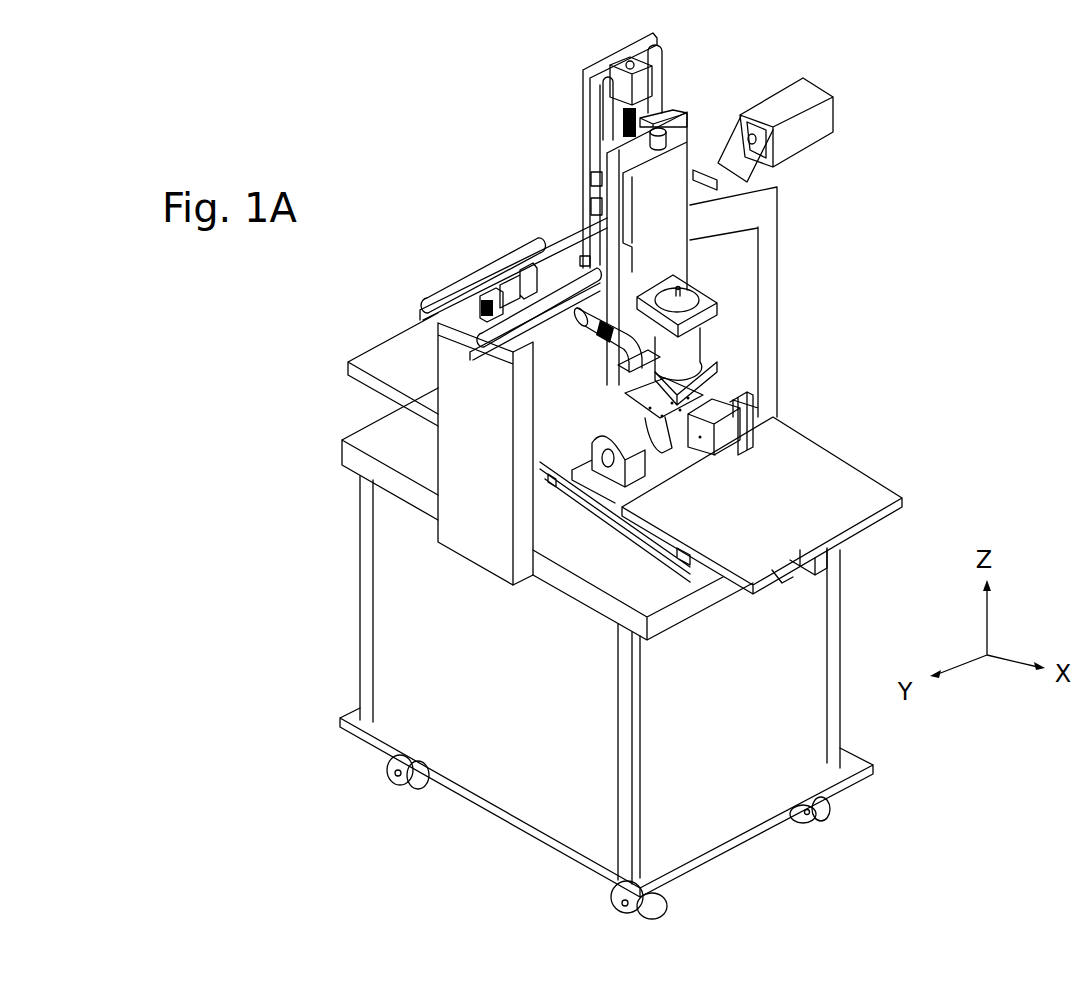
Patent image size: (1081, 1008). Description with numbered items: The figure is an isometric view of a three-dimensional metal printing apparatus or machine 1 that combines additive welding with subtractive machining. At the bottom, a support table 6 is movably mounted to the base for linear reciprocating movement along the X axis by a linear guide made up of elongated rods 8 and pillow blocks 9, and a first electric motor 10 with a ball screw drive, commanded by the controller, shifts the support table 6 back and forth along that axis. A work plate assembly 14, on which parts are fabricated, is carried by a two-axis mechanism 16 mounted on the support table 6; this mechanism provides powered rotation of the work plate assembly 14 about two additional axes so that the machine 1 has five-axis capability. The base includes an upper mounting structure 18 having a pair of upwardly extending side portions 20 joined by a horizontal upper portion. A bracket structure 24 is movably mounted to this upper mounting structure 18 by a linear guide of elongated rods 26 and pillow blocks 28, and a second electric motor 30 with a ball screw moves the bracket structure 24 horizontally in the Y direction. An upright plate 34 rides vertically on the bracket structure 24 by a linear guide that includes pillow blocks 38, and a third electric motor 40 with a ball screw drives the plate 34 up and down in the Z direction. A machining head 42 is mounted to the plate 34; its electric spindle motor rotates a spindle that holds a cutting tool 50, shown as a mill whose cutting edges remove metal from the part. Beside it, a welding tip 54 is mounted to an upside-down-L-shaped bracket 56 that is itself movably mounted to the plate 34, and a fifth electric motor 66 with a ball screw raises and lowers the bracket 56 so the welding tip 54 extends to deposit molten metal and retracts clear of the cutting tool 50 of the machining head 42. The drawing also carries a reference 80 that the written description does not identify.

The 3D metal printing apparatus 1 is at (877, 362).
The support table 6 is at (662, 460).
The elongated rods 8 is at (670, 547).
The pillow blocks 9 is at (552, 478).
The first electric motor 10 is at (800, 565).
The work plate assembly 14 is at (700, 403).
The two-axis mechanism 16 is at (764, 436).
The upper mounting structure 18 is at (498, 547).
The side portions 20 is at (493, 515).
The bracket structure 24 is at (563, 113).
The elongated rods 26 is at (488, 277).
The pillow blocks 28 is at (590, 262).
The second electric motor 30 is at (823, 122).
The upright plate 34 is at (700, 105).
The pillow blocks 38 is at (668, 110).
The third electric motor 40 is at (623, 88).
The machining head 42 is at (712, 340).
The cutting tool 50 is at (683, 400).
The welding tip 54 is at (613, 397).
The bracket 56 is at (670, 208).
The fifth electric motor 66 is at (678, 133).
The plate 80 is at (750, 407).